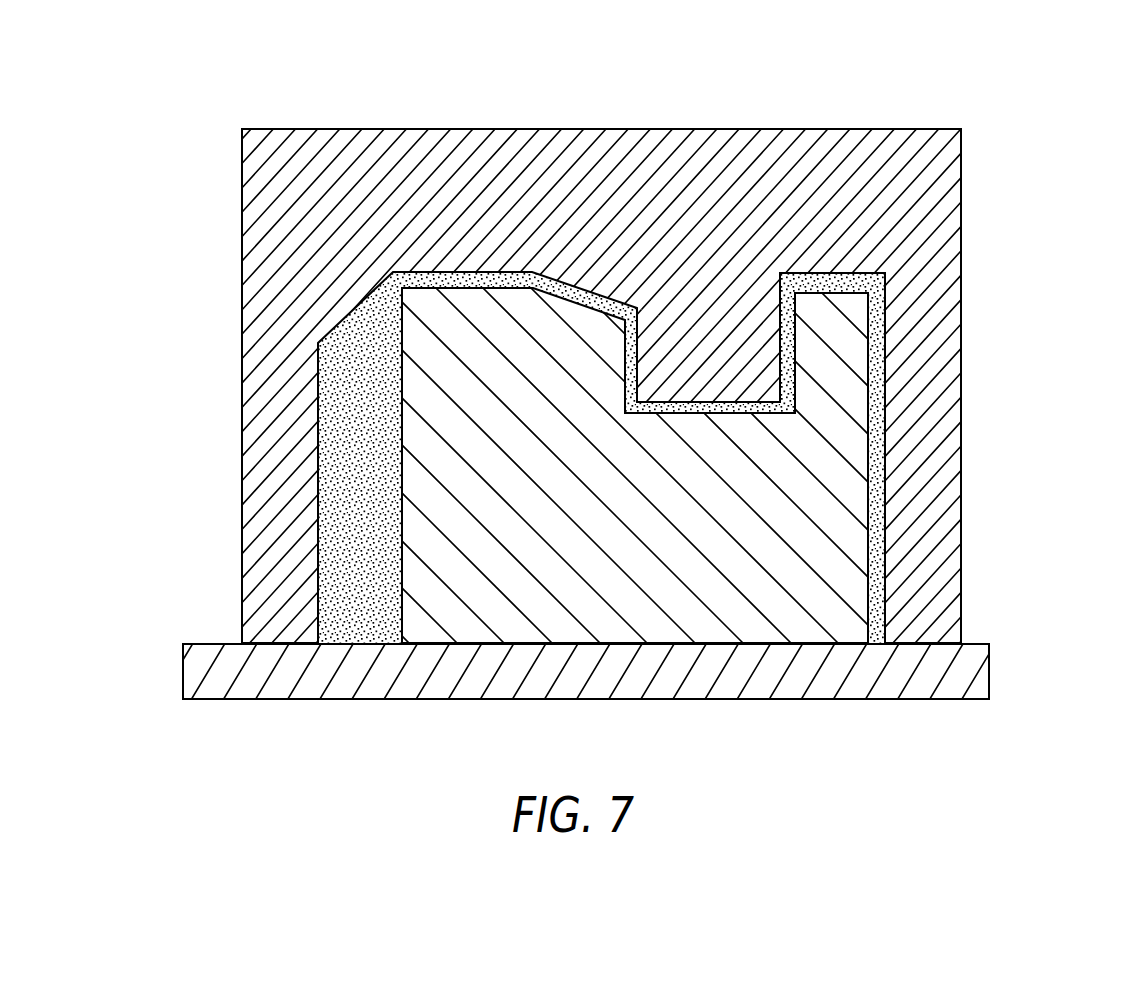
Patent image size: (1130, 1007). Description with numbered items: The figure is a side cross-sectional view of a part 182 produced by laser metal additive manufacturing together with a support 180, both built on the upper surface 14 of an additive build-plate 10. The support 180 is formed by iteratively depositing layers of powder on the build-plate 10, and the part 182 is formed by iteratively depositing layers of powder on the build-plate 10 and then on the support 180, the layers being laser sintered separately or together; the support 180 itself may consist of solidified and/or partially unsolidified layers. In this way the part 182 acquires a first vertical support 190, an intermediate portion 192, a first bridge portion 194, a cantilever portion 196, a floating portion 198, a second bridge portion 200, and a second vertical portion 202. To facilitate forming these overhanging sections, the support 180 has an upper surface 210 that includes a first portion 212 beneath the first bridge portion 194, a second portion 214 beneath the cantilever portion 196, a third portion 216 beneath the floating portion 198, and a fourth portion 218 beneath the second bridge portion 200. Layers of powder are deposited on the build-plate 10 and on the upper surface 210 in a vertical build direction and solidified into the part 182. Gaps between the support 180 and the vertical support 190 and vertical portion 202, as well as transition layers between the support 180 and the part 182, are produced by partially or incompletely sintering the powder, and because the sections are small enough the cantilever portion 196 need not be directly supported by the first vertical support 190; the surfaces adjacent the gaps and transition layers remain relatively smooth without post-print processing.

The build-plate 10 is at (565, 392).
The upper surface 14 is at (982, 644).
The support 180 is at (465, 605).
The part 182 is at (565, 346).
The first vertical support 190 is at (273, 505).
The intermediate portion 192 is at (347, 302).
The first bridge portion 194 is at (484, 247).
The cantilever portion 196 is at (608, 282).
The floating portion 198 is at (715, 370).
The second bridge portion 200 is at (844, 267).
The second vertical portion 202 is at (942, 330).
The upper surface 210 is at (420, 290).
The first portion 212 is at (468, 288).
The second portion 214 is at (565, 300).
The third portion 216 is at (675, 410).
The fourth portion 218 is at (812, 293).